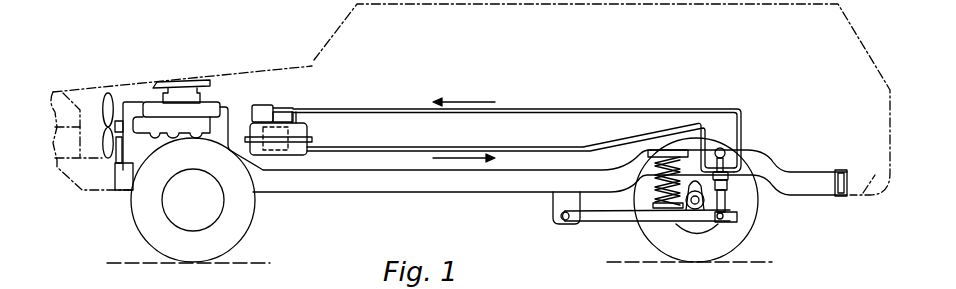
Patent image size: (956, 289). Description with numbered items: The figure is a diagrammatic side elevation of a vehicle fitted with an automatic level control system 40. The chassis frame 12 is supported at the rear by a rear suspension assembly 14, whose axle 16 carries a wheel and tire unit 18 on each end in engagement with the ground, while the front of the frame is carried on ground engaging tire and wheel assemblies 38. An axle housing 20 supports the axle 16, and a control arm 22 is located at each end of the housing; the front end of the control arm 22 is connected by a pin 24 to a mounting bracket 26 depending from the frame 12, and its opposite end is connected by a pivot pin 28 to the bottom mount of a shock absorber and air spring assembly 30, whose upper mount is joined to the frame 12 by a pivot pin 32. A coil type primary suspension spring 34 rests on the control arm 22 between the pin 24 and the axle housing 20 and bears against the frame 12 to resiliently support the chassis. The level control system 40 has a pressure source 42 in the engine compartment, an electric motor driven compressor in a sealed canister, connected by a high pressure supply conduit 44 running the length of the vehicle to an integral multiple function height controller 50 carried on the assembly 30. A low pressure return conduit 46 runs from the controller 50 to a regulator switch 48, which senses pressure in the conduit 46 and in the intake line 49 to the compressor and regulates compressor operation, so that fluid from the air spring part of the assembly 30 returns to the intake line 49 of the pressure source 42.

The chassis frame 12 is at (497, 180).
The rear suspension assembly 14 is at (702, 233).
The axle 16 is at (720, 235).
The wheel and tire unit 18 is at (743, 228).
The axle housing 20 is at (692, 209).
The control arm 22 is at (623, 216).
The pin 24 is at (563, 222).
The mounting bracket 26 is at (553, 208).
The pivot pin 28 is at (728, 215).
The shock absorber and air spring assembly 30 is at (734, 189).
The pivot pin 32 is at (722, 149).
The primary suspension spring 34 is at (652, 160).
The tire and wheel assembly 38 is at (237, 215).
The automatic level control system 40 is at (283, 113).
The pressure source 42 is at (302, 130).
The supply conduit 44 is at (412, 150).
The return conduit 46 is at (545, 109).
The regulator switch 48 is at (262, 105).
The intake line 49 is at (300, 117).
The multiple function height controller 50 is at (725, 166).